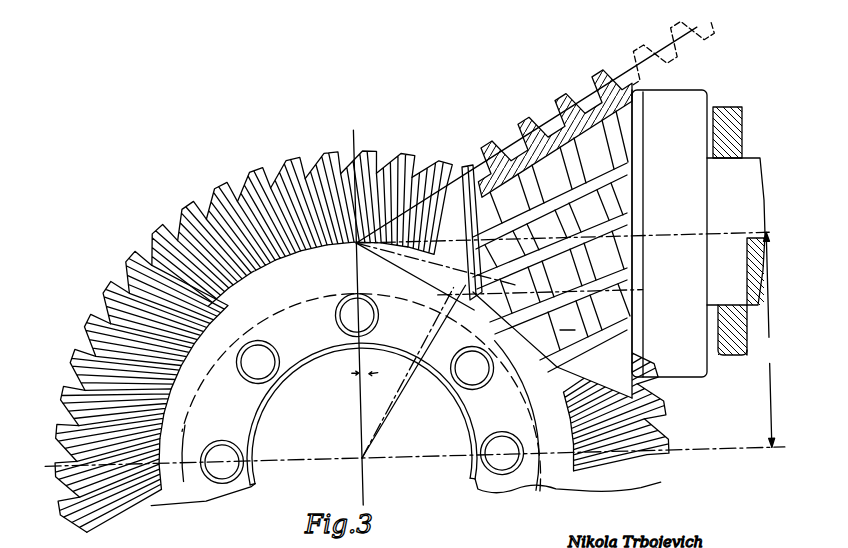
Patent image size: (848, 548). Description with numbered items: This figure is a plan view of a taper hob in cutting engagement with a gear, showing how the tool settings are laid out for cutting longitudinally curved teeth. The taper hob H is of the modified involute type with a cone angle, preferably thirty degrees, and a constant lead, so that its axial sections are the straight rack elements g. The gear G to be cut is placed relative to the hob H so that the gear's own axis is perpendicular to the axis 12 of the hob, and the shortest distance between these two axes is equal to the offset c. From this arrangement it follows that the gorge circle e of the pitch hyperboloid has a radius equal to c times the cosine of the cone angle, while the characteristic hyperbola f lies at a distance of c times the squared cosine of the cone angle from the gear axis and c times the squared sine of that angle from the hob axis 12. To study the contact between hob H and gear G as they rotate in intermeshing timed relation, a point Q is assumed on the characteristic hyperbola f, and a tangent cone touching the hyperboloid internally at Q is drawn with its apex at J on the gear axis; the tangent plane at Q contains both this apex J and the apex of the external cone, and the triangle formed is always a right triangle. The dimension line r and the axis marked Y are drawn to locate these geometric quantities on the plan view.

The gear G is at (146, 239).
The taper hob H is at (557, 108).
The rack elements g is at (681, 53).
The characteristic hyperbola f is at (645, 301).
The axis of the hob 12 is at (736, 241).
The gorge circle e is at (192, 397).
The shortest distance between axes c is at (768, 339).
The vertical axis of gear Y is at (353, 310).
The apex of tangent cone J is at (366, 461).
The pitch point P is at (522, 170).
The point on characteristic hyperbola Q is at (575, 322).
The pinion pitch radius r is at (499, 266).